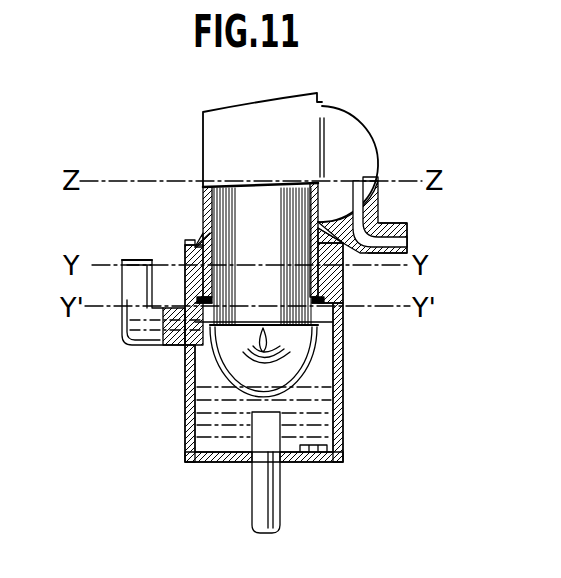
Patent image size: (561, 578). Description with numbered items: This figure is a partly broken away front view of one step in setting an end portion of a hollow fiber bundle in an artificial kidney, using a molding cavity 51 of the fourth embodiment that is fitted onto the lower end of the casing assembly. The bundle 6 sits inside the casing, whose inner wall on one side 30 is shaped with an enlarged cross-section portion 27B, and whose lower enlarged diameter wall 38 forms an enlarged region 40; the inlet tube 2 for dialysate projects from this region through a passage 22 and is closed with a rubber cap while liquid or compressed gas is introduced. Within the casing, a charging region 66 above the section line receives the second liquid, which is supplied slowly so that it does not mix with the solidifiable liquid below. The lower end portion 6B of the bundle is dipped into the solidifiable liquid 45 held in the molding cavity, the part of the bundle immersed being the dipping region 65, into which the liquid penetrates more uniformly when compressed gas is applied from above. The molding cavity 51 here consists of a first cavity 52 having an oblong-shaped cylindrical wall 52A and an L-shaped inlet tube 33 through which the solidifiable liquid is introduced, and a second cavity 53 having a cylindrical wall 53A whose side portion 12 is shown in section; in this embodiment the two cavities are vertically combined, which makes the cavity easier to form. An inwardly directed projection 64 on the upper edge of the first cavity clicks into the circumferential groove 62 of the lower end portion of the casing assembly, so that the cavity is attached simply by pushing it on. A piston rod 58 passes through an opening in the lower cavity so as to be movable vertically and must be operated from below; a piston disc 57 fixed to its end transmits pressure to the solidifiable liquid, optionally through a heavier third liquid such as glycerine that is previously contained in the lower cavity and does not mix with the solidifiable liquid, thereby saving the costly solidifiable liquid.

The inner wall side 30 is at (203, 137).
The charging region 66 is at (257, 195).
The bundle 6 is at (321, 189).
The enlarged cross-section portion 27B is at (352, 130).
The elbow passage 22 is at (362, 192).
The inlet tube for dialysate 2 is at (404, 235).
The annular groove 62 is at (200, 238).
The inwardly directed projection 64 is at (185, 243).
The L-shaped inlet tube 33 is at (127, 268).
The oblong-shaped cylindrical wall 52A is at (183, 275).
The first cavity 52 is at (176, 281).
The lower enlarged diameter wall 38 is at (335, 272).
The enlarged region 40 is at (340, 298).
The dipping region 65 is at (326, 326).
The casing wall 12 is at (338, 382).
The lower end portion of the bundle 6B is at (223, 349).
The solidifiable liquid 45 is at (318, 394).
The cylindrical wall 53A is at (345, 449).
The piston disc 57 is at (312, 463).
The molding cavity 51 is at (348, 480).
The second cavity 53 is at (185, 440).
The piston rod 58 is at (257, 508).